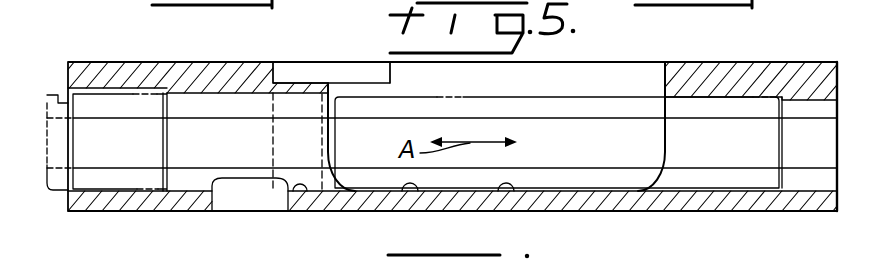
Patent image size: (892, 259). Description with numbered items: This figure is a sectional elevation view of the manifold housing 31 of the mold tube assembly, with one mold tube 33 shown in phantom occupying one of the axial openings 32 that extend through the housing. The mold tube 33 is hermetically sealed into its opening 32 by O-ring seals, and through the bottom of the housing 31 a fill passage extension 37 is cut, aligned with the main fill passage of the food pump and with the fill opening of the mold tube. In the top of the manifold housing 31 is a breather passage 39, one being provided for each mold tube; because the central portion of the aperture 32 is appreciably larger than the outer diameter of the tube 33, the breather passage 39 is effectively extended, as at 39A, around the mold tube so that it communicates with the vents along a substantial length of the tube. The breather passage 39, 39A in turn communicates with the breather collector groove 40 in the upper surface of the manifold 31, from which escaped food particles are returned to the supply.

The manifold housing 31 is at (200, 32).
The axial opening 32 is at (409, 192).
The mold tube 33 is at (55, 192).
The fill passage extension hole 37 is at (241, 203).
The breather passage 39 is at (593, 72).
The breather passage extension 39A is at (507, 192).
The breather collector groove 40 is at (345, 38).